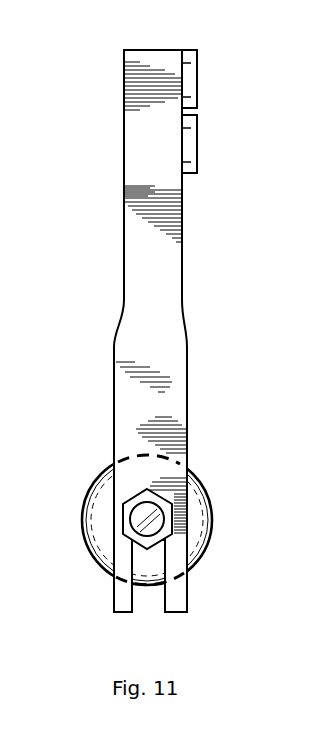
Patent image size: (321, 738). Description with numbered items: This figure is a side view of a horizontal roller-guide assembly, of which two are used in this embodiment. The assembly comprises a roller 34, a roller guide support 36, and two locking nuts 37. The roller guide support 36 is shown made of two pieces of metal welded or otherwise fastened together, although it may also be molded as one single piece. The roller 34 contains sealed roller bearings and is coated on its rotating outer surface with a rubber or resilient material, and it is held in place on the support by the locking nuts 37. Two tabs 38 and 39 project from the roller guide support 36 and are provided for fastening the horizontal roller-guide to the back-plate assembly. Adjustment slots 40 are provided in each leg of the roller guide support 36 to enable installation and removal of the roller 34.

The roller 34 is at (202, 478).
The roller guide support 36 is at (122, 253).
The locking nut 37 is at (122, 527).
The tab 38 is at (198, 142).
The tab 39 is at (198, 72).
The adjustment slot 40 is at (132, 600).